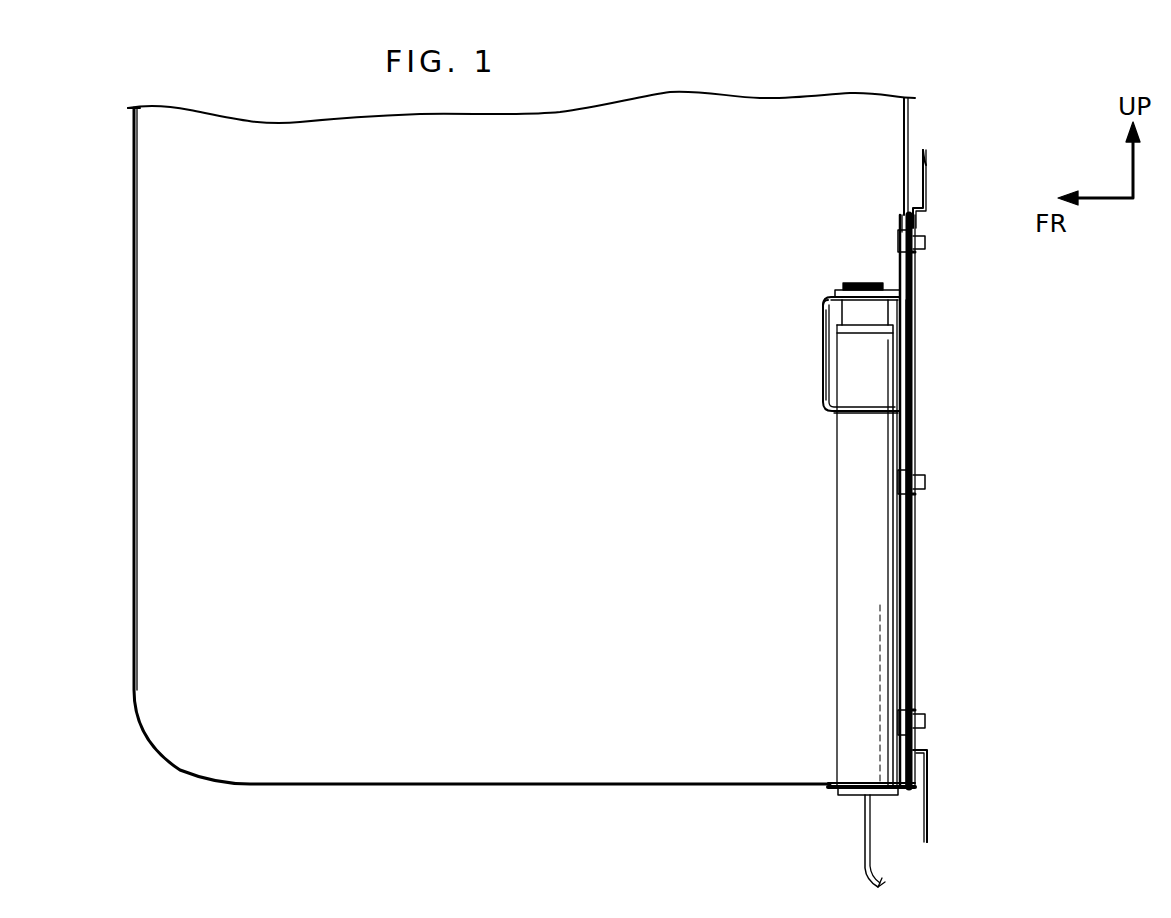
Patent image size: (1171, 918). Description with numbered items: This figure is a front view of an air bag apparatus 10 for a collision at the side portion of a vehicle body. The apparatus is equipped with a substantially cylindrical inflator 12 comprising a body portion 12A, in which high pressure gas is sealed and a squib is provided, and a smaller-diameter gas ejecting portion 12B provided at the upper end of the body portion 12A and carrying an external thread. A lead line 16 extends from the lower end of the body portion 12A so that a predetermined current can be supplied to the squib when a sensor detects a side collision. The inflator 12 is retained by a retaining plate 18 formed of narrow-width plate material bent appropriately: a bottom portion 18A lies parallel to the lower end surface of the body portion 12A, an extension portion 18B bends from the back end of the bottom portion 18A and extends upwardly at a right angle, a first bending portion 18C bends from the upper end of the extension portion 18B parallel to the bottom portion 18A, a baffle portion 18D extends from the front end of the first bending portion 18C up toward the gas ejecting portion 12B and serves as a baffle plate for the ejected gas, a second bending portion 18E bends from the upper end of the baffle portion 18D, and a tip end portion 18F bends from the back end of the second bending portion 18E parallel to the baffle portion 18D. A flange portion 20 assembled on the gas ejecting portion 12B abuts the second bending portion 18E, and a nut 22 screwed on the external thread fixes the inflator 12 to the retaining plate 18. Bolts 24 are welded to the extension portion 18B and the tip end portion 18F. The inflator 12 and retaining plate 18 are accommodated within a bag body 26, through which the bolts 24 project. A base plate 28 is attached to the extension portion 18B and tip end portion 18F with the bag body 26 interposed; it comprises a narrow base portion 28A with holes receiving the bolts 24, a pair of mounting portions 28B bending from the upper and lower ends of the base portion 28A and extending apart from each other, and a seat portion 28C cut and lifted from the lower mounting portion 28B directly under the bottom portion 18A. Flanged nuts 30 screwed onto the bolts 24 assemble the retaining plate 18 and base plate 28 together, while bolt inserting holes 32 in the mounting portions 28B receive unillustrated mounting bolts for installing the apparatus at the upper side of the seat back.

The air bag apparatus 10 is at (1008, 148).
The inflator 12 is at (828, 505).
The body portion 12A is at (850, 553).
The gas ejecting portion 12B is at (880, 318).
The lead line 16 is at (873, 855).
The retaining plate 18 is at (824, 405).
The bottom portion 18A is at (850, 785).
The extension portion 18B is at (900, 645).
The first bending portion 18C is at (860, 415).
The baffle portion 18D is at (825, 356).
The second bending portion 18E is at (830, 297).
The tip end portion 18F is at (902, 225).
The flange portion 20 is at (828, 302).
The nut 22 is at (856, 284).
The bolts 24 is at (926, 243).
The bag body 26 is at (134, 540).
The base plate 28 is at (920, 398).
The base portion 28A is at (913, 370).
The mounting portions 28B is at (927, 200).
The seat portion 28C is at (838, 793).
The flanged nuts 30 is at (914, 254).
The bolt inserting holes 32 is at (927, 162).